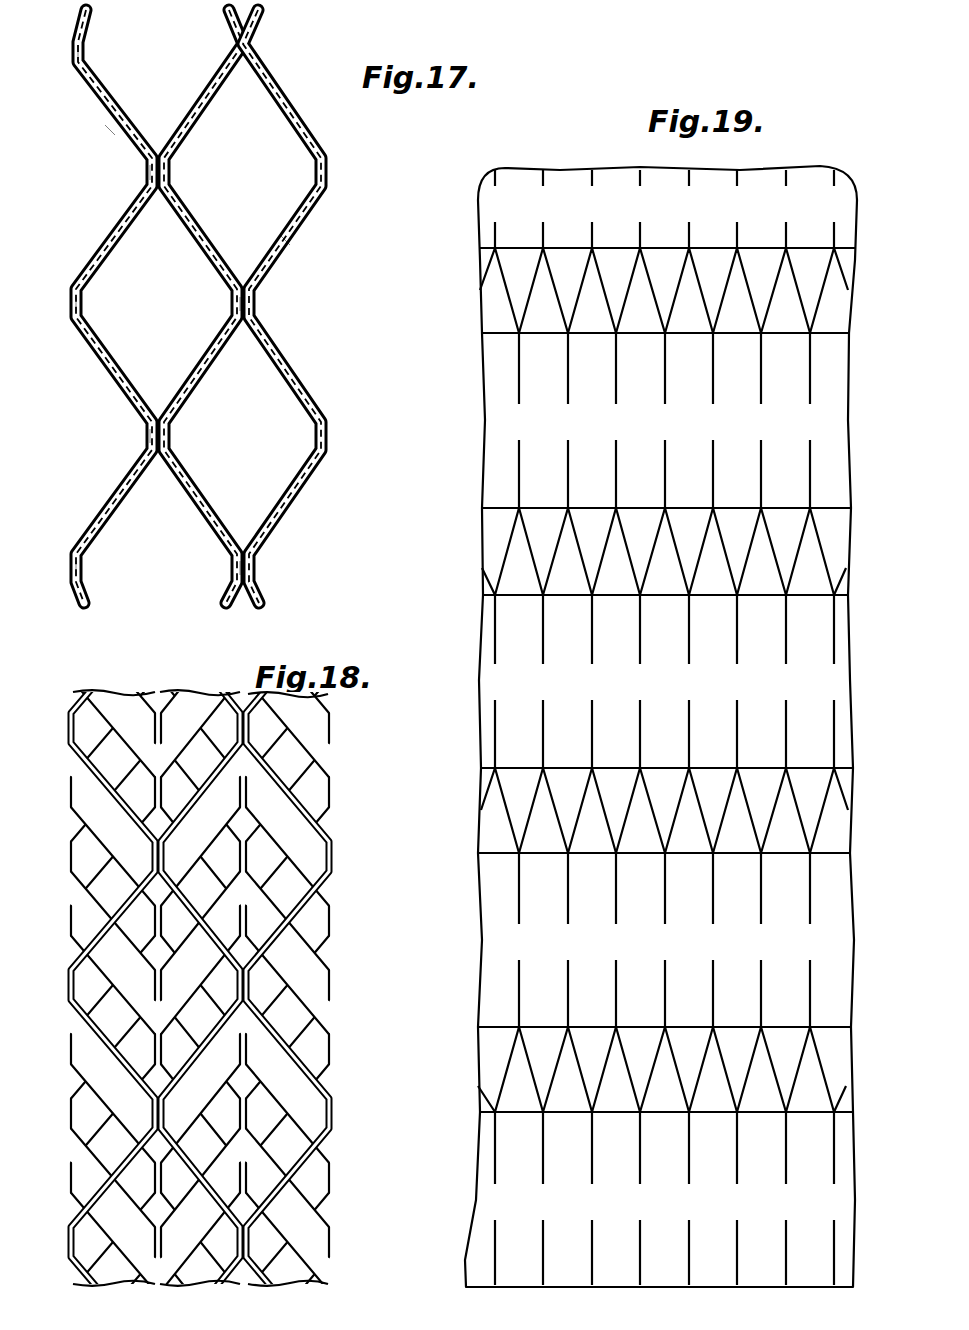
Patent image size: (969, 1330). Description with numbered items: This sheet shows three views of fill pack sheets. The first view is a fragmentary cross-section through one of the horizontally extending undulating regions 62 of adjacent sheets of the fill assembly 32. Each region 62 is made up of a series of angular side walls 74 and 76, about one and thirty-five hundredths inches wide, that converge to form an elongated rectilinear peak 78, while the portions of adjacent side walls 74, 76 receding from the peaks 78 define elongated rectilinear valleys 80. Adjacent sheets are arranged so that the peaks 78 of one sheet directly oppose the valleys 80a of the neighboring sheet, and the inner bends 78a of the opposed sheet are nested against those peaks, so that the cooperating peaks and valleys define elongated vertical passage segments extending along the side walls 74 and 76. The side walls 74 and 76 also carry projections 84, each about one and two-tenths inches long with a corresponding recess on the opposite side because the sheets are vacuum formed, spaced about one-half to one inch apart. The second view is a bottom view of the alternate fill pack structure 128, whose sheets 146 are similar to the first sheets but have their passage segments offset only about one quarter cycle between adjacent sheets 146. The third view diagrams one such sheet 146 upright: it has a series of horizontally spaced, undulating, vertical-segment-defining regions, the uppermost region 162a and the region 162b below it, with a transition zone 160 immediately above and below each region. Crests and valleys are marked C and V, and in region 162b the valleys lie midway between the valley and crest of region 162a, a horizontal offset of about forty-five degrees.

In FIG. 17, the stent mesh 32 is at (304, 64).
In FIG. 17, the horizontally extending undulating region 62 is at (292, 378).
In FIG. 17, the angular side wall 74 is at (290, 242).
In FIG. 17, the angular side wall 76 is at (108, 98).
In FIG. 17, the peak 78 is at (74, 62).
In FIG. 17, the inner bend 78a is at (170, 174).
In FIG. 17, the valley 80 is at (146, 174).
In FIG. 17, the valley 80a is at (232, 303).
In FIG. 17, the projection 84 is at (112, 131).
In FIG. 18, the fill pack structure 128 is at (335, 845).
In FIG. 19, the fill pack structure 128 is at (482, 528).
In FIG. 18, the sheet 146 is at (205, 692).
In FIG. 19, the sheet 146 is at (483, 625).
In FIG. 19, the transition zone 160 is at (830, 548).
In FIG. 19, the uppermost region 162a is at (836, 378).
In FIG. 19, the region 162b is at (848, 742).